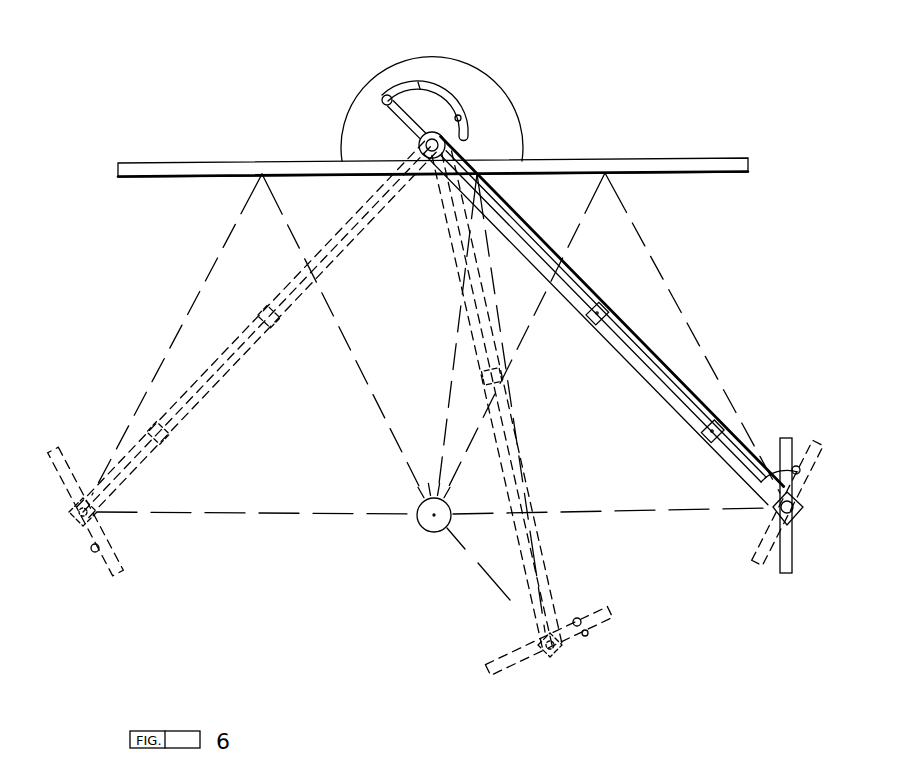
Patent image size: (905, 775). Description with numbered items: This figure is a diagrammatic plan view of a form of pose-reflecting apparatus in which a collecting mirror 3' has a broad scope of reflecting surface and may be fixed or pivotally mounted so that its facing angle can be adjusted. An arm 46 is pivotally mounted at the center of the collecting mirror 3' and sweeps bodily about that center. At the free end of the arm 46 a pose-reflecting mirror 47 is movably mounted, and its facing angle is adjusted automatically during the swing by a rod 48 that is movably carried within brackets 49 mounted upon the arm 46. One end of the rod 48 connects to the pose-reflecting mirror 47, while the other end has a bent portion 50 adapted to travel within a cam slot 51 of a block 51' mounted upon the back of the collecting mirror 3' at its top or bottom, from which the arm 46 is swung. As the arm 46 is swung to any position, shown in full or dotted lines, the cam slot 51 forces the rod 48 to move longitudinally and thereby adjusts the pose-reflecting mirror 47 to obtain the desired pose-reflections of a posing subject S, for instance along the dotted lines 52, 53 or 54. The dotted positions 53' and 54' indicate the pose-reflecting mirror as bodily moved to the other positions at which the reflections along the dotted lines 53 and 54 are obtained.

The mirror bar 3' is at (433, 186).
The slot of arm 46 is at (632, 363).
The vertical guide bar 47 is at (793, 578).
The pivoted arm 48 is at (657, 360).
The slider 49 is at (706, 440).
The pin on short arm 50 is at (389, 96).
The curved guide slot 51 is at (460, 96).
The semicircular path 51' is at (462, 109).
The light ray path to right instrument 52 is at (668, 285).
The light ray path to lower instrument 53 is at (492, 397).
The lower instrument position 53' is at (548, 653).
The light ray path to left instrument 54 is at (257, 329).
The left instrument position 54' is at (128, 511).
The light source S is at (422, 527).